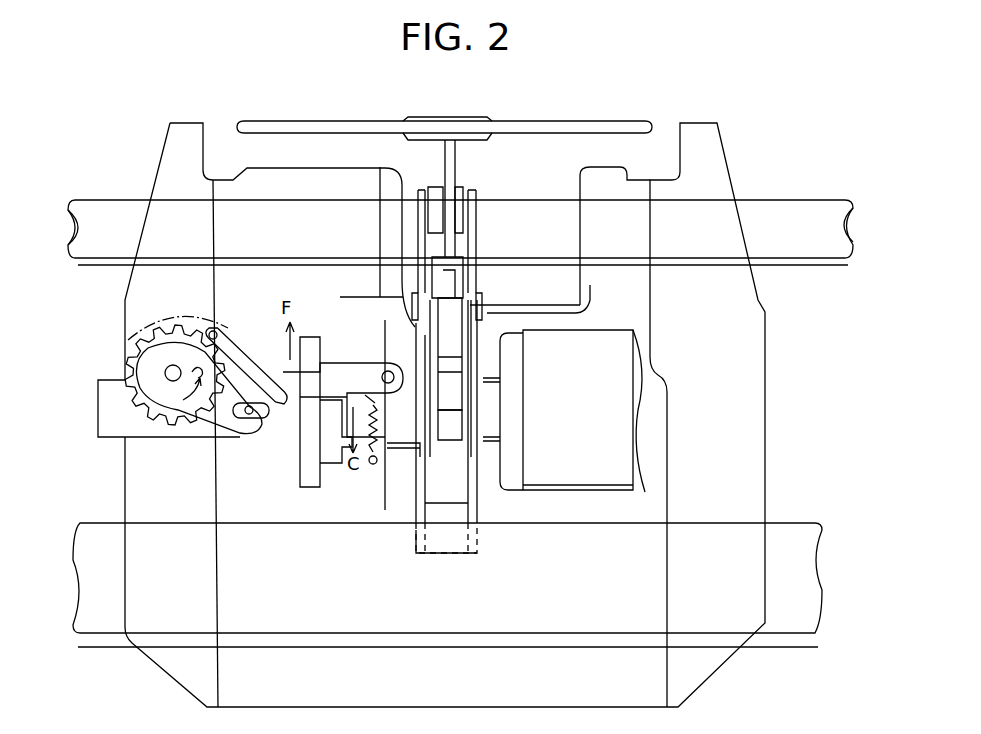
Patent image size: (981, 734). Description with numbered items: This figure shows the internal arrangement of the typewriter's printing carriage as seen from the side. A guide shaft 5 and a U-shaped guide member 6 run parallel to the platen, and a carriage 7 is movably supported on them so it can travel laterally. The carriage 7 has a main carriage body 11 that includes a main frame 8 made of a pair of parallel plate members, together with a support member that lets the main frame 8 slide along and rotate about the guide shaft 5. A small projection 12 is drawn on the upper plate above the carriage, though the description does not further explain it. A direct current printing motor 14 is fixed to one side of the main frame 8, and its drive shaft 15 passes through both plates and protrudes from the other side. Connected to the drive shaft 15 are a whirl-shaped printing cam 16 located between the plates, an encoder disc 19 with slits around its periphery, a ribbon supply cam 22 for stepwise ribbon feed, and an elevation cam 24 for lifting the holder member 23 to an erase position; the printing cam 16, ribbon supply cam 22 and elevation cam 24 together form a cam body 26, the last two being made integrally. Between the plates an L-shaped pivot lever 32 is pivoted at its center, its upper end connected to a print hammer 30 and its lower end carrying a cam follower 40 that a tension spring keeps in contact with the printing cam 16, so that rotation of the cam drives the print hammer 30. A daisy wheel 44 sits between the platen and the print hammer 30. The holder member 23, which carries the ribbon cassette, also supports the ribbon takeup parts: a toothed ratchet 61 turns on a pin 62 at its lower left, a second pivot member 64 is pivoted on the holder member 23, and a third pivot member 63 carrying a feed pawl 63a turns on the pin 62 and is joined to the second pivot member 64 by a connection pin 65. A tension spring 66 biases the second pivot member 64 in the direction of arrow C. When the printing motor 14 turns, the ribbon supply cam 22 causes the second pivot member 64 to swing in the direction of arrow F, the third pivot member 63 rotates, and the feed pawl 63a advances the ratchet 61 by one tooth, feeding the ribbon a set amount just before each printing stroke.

The guide shaft 5 is at (113, 218).
The guide member 6 is at (805, 592).
The carriage 7 is at (442, 575).
The main frame 8 is at (470, 235).
The main carriage body 11 is at (404, 225).
The slide plate projection 12 is at (389, 111).
The printing motor 14 is at (617, 410).
The drive shaft 15 is at (371, 465).
The printing cam 16 is at (494, 443).
The encoder disc 19 is at (383, 321).
The ribbon supply cam 22 is at (330, 455).
The holder member 23 is at (668, 513).
The elevation cam 24 is at (307, 483).
The cam body 26 is at (349, 485).
The print hammer 30 is at (457, 172).
The pivot lever 32 is at (436, 253).
The cam follower 40 is at (450, 393).
The daisy wheel 44 is at (444, 106).
The ratchet 61 is at (139, 370).
The pin 62 is at (166, 373).
The third pivot member 63 is at (248, 391).
The feed pawl 63a is at (207, 353).
The second pivot member 64 is at (290, 420).
The connection pin 65 is at (222, 430).
The tension spring 66 is at (372, 402).